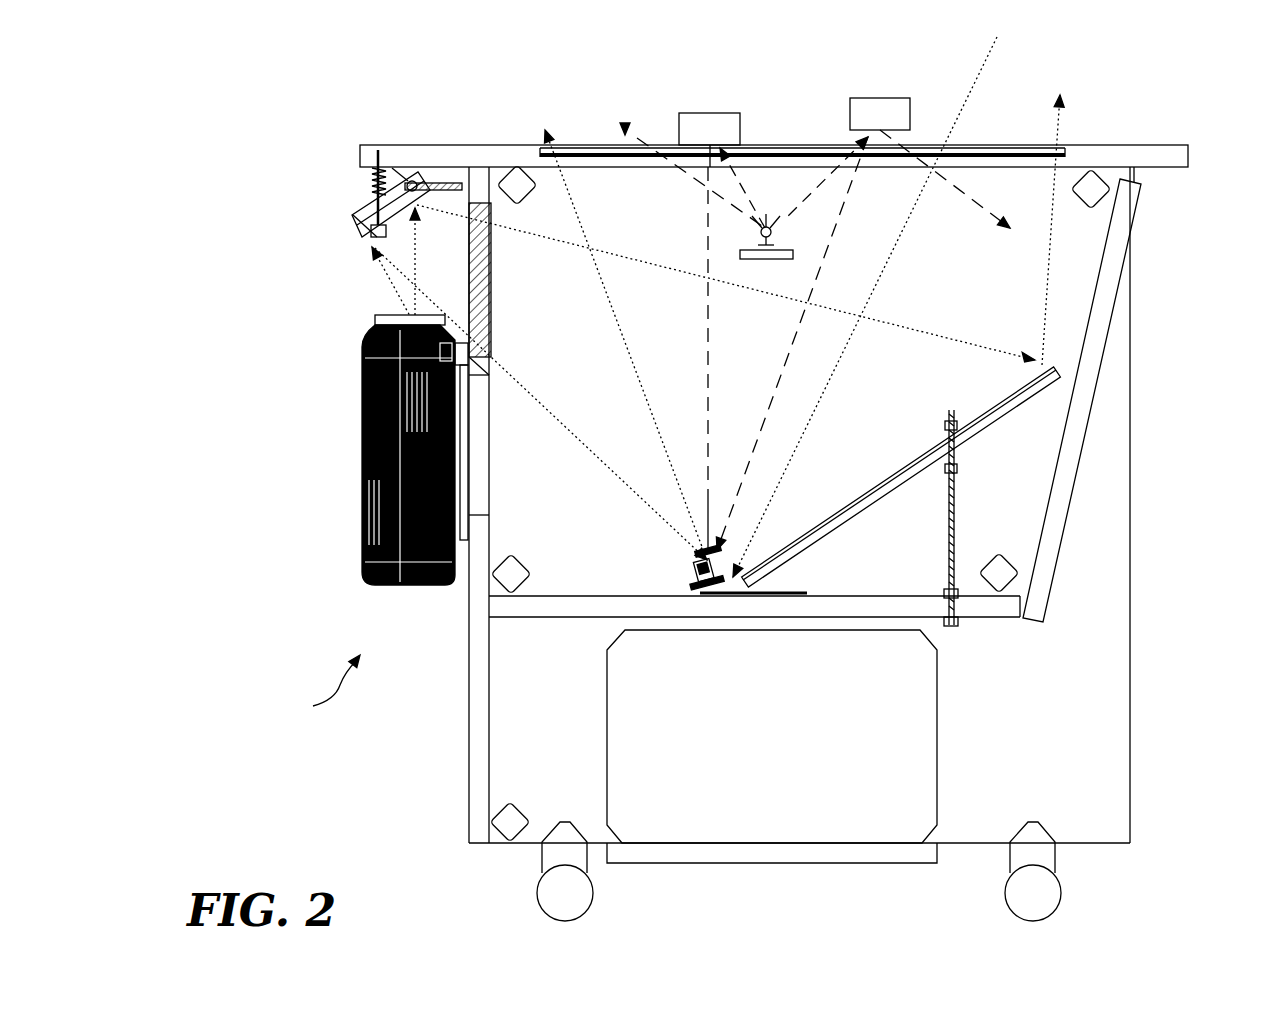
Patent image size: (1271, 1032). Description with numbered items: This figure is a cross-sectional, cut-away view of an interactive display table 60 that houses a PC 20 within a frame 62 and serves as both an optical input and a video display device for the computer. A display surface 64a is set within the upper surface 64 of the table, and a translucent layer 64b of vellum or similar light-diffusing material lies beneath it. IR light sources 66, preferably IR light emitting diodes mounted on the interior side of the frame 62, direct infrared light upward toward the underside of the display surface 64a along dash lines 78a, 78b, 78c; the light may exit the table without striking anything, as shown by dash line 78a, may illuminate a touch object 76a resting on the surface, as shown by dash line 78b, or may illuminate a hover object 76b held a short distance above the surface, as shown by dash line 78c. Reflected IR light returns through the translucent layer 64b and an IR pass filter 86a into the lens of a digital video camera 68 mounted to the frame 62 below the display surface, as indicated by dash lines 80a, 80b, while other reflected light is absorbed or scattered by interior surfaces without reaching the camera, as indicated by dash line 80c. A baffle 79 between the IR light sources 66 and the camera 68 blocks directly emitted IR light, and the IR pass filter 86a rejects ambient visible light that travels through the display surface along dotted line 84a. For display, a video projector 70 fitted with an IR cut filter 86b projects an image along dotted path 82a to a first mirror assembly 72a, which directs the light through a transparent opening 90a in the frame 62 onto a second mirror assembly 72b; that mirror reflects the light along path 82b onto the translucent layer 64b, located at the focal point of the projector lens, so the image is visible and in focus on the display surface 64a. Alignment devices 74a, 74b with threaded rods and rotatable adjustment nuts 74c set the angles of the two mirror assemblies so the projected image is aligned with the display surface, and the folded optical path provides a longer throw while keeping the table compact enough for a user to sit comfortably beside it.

The PC 20 is at (937, 735).
The interactive display table 60 is at (320, 691).
The frame 62 is at (468, 727).
The upper surface 64 is at (505, 145).
The display surface 64a is at (598, 145).
The translucent layer 64b is at (972, 150).
The IR light sources 66 is at (759, 235).
The digital video camera 68 is at (697, 573).
The video projector 70 is at (362, 422).
The first mirror assembly 72a is at (370, 237).
The second mirror assembly 72b is at (880, 490).
The alignment device 74a is at (455, 185).
The alignment device 74b is at (954, 495).
The rotatable adjustment nuts 74c is at (372, 232).
The touch object 76a is at (695, 113).
The hover object 76b is at (868, 98).
The dash line 78a is at (683, 163).
The dash line 78b is at (745, 186).
The dash line 78c is at (830, 175).
The baffle 79 is at (768, 260).
The dash line 80a is at (703, 337).
The dash line 80b is at (788, 357).
The dash line 80c is at (980, 206).
The dotted path 82a is at (393, 278).
The path 82b is at (615, 286).
The dotted line 84a is at (995, 52).
The IR pass filter 86a is at (695, 551).
The IR cut filter 86b is at (377, 318).
The transparent opening 90a is at (493, 323).